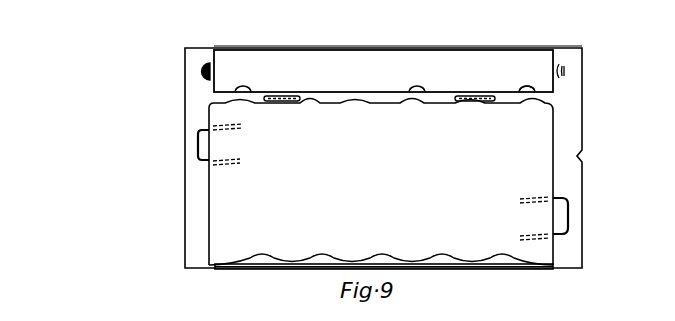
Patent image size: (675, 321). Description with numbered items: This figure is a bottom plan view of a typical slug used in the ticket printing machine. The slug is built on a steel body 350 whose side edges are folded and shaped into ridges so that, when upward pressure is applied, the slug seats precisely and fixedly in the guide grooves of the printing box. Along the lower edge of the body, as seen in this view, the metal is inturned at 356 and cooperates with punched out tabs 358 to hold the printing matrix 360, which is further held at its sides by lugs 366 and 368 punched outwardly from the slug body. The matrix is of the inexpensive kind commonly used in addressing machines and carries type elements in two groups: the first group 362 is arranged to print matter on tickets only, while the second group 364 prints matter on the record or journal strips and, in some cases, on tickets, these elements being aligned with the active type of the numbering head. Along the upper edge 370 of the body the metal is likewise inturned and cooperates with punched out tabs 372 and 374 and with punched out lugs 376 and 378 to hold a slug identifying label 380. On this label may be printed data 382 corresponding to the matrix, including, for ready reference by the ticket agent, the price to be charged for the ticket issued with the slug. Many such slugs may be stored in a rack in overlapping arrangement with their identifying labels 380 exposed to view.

The slug body 350 is at (200, 207).
The inturned lower edge 356 is at (480, 269).
The punched out tabs 358 is at (483, 101).
The printing matrix 360 is at (537, 122).
The first group of type elements 362 is at (382, 207).
The second group of type elements 364 is at (225, 114).
The side lug 366 is at (199, 150).
The side lug 368 is at (568, 212).
The inturned upper edge 370 is at (422, 50).
The punched out tab 372 is at (240, 91).
The punched out tab 374 is at (537, 89).
The punched out lug 376 is at (206, 70).
The punched out lug 378 is at (565, 72).
The slug identifying label 380 is at (292, 67).
The printed data 382 is at (352, 65).